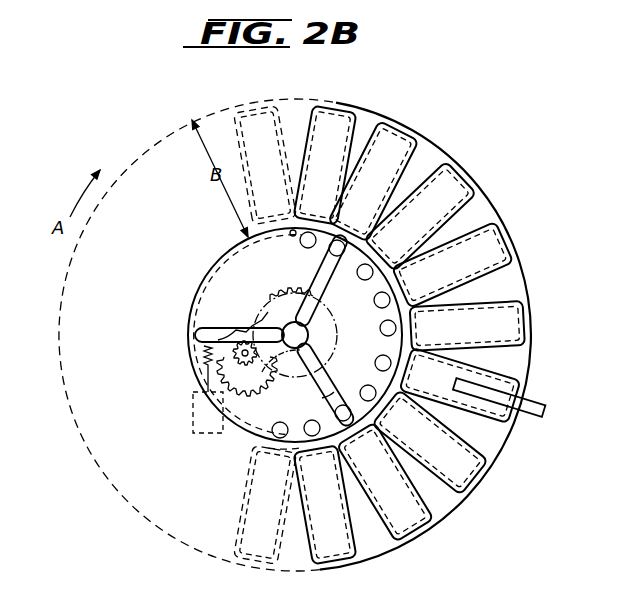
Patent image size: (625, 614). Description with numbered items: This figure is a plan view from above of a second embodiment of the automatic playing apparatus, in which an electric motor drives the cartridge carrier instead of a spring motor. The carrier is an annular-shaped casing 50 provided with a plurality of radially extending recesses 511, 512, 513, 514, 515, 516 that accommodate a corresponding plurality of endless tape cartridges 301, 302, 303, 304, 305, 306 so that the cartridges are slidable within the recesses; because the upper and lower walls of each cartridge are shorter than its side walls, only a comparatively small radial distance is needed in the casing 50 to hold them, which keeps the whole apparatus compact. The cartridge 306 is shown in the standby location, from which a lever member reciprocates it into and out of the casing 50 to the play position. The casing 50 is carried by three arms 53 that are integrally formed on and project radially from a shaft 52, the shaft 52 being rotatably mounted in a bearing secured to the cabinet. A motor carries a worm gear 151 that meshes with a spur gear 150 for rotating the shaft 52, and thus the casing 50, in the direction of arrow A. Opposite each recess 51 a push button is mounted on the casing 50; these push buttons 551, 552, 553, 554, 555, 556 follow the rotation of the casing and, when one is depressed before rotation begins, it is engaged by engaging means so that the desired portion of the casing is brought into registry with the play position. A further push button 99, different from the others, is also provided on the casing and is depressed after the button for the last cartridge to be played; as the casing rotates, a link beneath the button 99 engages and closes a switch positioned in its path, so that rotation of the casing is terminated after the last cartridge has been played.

The casing 50 is at (474, 497).
The cartridge 301 is at (338, 103).
The cartridge 302 is at (396, 123).
The cartridge 303 is at (460, 164).
The cartridge 304 is at (504, 223).
The cartridge 305 is at (522, 309).
The cartridge 306 is at (513, 386).
The recess 51 is at (544, 411).
The recess 511 is at (352, 104).
The recess 512 is at (416, 138).
The recess 513 is at (472, 193).
The recess 514 is at (511, 253).
The recess 515 is at (523, 343).
The recess 516 is at (512, 428).
The shaft 52 is at (292, 330).
The arm 53 is at (219, 340).
The push button 551 is at (302, 244).
The push button 552 is at (333, 256).
The push button 553 is at (359, 277).
The push button 554 is at (375, 303).
The push button 555 is at (381, 329).
The push button 556 is at (376, 361).
The push button 99 is at (291, 236).
The spur gear 150 is at (276, 372).
The worm gear 151 is at (207, 364).